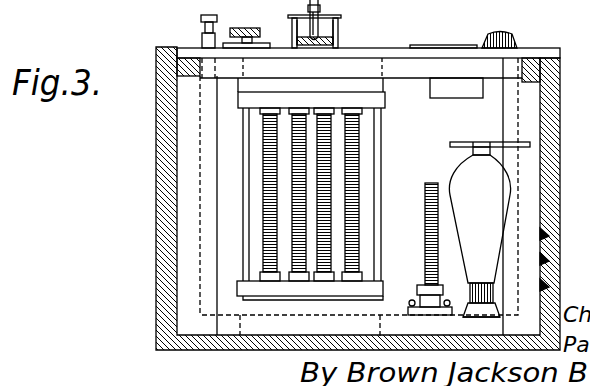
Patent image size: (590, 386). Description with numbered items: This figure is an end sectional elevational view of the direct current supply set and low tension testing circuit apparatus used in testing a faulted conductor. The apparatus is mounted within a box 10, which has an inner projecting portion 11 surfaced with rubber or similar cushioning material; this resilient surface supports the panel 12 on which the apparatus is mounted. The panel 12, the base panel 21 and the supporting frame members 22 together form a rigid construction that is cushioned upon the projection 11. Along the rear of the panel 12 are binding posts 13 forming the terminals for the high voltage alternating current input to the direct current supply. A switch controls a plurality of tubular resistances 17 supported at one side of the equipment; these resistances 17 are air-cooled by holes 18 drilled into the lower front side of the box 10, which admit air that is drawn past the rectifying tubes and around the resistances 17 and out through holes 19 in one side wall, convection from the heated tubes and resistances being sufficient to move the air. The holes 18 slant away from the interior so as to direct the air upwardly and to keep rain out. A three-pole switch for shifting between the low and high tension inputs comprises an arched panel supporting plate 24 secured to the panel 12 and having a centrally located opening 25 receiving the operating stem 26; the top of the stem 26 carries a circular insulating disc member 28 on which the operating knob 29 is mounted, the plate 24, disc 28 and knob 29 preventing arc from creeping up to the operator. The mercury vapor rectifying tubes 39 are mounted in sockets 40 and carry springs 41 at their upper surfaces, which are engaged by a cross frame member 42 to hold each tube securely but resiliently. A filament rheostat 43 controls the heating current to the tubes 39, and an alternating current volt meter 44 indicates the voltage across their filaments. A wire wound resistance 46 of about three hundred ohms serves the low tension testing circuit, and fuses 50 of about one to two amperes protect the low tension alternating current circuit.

The box 10 is at (165, 104).
The inner projecting portion 11 is at (187, 67).
The panel 12 is at (187, 51).
The binding posts 13 is at (201, 12).
The tubular resistances 17 is at (297, 203).
The holes 18 is at (560, 277).
The holes 19 is at (258, 23).
The base panel 21 is at (232, 330).
The supporting frame members 22 is at (207, 145).
The arched panel supporting plate 24 is at (336, 33).
The centrally located opening 25 is at (340, 17).
The operating stem 26 is at (292, 25).
The circular insulating disc member 28 is at (295, 17).
The operating knob 29 is at (320, 10).
The mercury vapor rectifying tubes 39 is at (470, 153).
The sockets 40 is at (473, 312).
The springs 41 is at (496, 141).
The cross frame member 42 is at (460, 133).
The filament rheostat 43 is at (517, 36).
The alternating current volt meter 44 is at (448, 27).
The wire wound resistance 46 is at (428, 185).
The fuses 50 is at (447, 292).